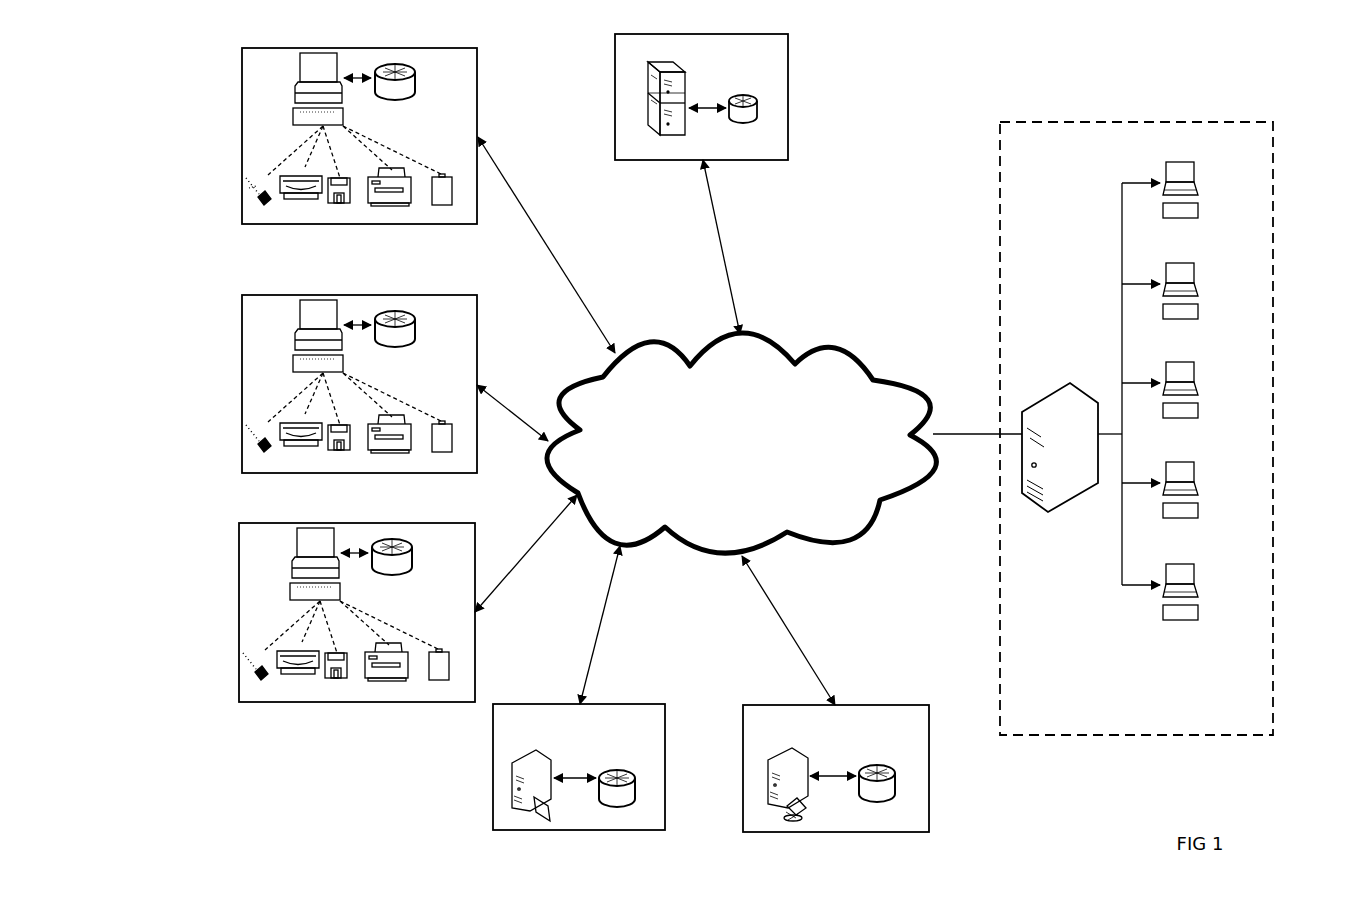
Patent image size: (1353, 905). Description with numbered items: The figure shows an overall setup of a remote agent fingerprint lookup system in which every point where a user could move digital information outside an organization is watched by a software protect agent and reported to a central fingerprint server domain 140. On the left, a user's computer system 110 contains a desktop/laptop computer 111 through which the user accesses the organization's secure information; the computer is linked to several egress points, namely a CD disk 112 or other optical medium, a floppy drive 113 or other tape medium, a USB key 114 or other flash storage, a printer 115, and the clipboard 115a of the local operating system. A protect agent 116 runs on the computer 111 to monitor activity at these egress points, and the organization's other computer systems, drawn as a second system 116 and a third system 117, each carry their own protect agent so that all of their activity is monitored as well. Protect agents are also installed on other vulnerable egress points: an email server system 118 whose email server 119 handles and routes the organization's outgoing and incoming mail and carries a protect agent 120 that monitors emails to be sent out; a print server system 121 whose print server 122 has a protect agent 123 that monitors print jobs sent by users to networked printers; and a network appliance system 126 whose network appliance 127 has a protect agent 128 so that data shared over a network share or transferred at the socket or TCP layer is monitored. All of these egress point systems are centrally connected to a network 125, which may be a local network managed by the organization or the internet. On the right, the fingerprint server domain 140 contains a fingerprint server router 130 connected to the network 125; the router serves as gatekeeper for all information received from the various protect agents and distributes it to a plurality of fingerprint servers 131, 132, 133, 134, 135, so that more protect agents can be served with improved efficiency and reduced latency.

The computer system 110 is at (241, 112).
The desktop/laptop computer 111 is at (300, 64).
The CD disk 112 is at (272, 208).
The floppy drive 113 is at (318, 203).
The USB key 114 is at (343, 204).
The printer 115 is at (410, 207).
The clipboard 115a is at (459, 206).
The protect agent 116 is at (418, 83).
The computer system 117 is at (239, 597).
The email server system 118 is at (547, 832).
The email server 119 is at (549, 752).
The protect agent 120 is at (605, 762).
The print server 121 is at (812, 833).
The print server 122 is at (805, 752).
The protect agent 123 is at (866, 762).
The network 125 is at (812, 350).
The network appliance system 126 is at (782, 161).
The network appliance 127 is at (667, 63).
The protect agent 128 is at (733, 91).
The fingerprint server router 130 is at (1075, 383).
The fingerprint server 131 is at (1198, 210).
The fingerprint server 132 is at (1198, 311).
The fingerprint server 133 is at (1198, 410).
The fingerprint server 134 is at (1198, 510).
The fingerprint server 135 is at (1198, 612).
The fingerprint server domain 140 is at (1140, 122).